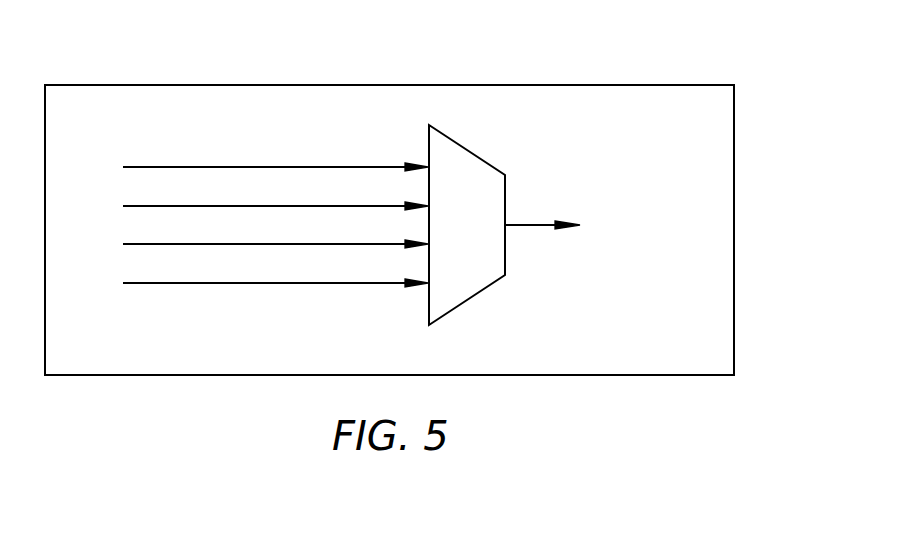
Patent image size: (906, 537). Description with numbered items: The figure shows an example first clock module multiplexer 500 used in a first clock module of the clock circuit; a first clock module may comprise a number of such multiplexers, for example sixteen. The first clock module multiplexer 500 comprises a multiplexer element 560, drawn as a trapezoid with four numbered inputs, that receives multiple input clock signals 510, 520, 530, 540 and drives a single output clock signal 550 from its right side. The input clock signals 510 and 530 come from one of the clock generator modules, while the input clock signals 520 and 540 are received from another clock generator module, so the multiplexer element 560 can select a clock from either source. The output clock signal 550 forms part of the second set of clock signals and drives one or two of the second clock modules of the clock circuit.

The first clock module multiplexer 500 is at (647, 58).
The input clock signal 510 is at (142, 167).
The input clock signal 520 is at (142, 206).
The input clock signal 530 is at (142, 244).
The input clock signal 540 is at (142, 283).
The output clock signal 550 is at (536, 222).
The multiplexer element 560 is at (467, 148).